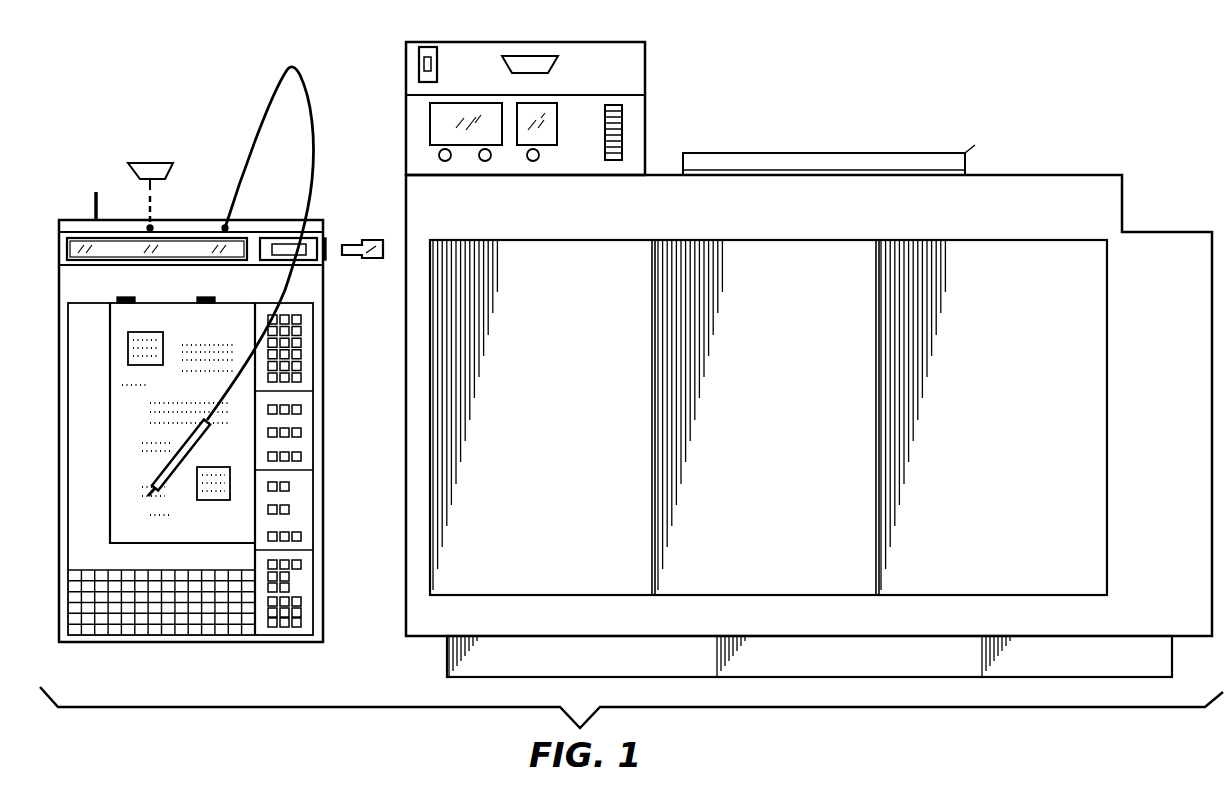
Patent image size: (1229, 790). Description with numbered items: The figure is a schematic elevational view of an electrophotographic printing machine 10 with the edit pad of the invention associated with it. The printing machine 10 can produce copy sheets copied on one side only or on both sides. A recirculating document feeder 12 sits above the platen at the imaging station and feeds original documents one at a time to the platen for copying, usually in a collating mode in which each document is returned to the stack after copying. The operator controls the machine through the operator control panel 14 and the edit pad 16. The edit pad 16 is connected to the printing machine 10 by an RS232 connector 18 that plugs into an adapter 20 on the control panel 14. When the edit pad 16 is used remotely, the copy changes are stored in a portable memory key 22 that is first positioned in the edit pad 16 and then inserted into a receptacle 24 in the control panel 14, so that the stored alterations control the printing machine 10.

The electrophotographic printing machine 10 is at (1012, 147).
The recirculating document feeder 12 is at (868, 127).
The operator control panel 14 is at (558, 108).
The edit pad 16 is at (206, 332).
The RS232 connector 18 is at (147, 160).
The adapter 20 is at (542, 64).
The portable memory key 22 is at (363, 258).
The receptacle 24 is at (419, 63).